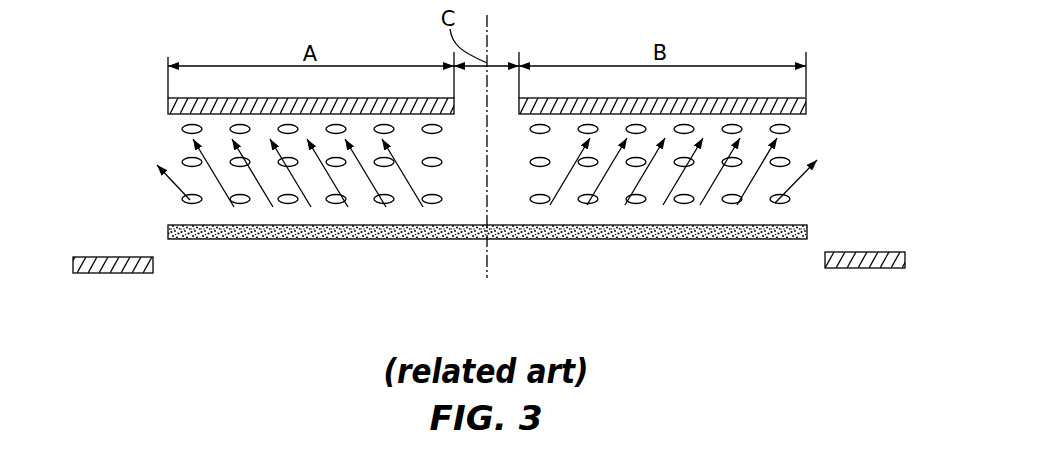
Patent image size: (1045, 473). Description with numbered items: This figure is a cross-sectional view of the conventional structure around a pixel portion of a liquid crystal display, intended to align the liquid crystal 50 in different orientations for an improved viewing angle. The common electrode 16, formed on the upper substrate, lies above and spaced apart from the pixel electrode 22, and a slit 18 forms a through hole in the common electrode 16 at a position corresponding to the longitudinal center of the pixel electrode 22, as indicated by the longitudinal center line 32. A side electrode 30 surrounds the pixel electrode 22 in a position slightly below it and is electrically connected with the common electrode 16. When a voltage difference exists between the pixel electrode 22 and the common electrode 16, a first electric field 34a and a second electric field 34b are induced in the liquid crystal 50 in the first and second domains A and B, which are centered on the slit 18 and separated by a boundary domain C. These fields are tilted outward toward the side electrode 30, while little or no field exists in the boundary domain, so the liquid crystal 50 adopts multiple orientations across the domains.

The common electrode 16 is at (168, 104).
The slit 18 is at (473, 108).
The pixel electrode 22 is at (565, 240).
The side electrode 30 is at (108, 273).
The longitudinal center line 32 is at (487, 262).
The first electric field 34a is at (176, 188).
The second electric field 34b is at (788, 157).
The liquid crystal 50 is at (688, 205).